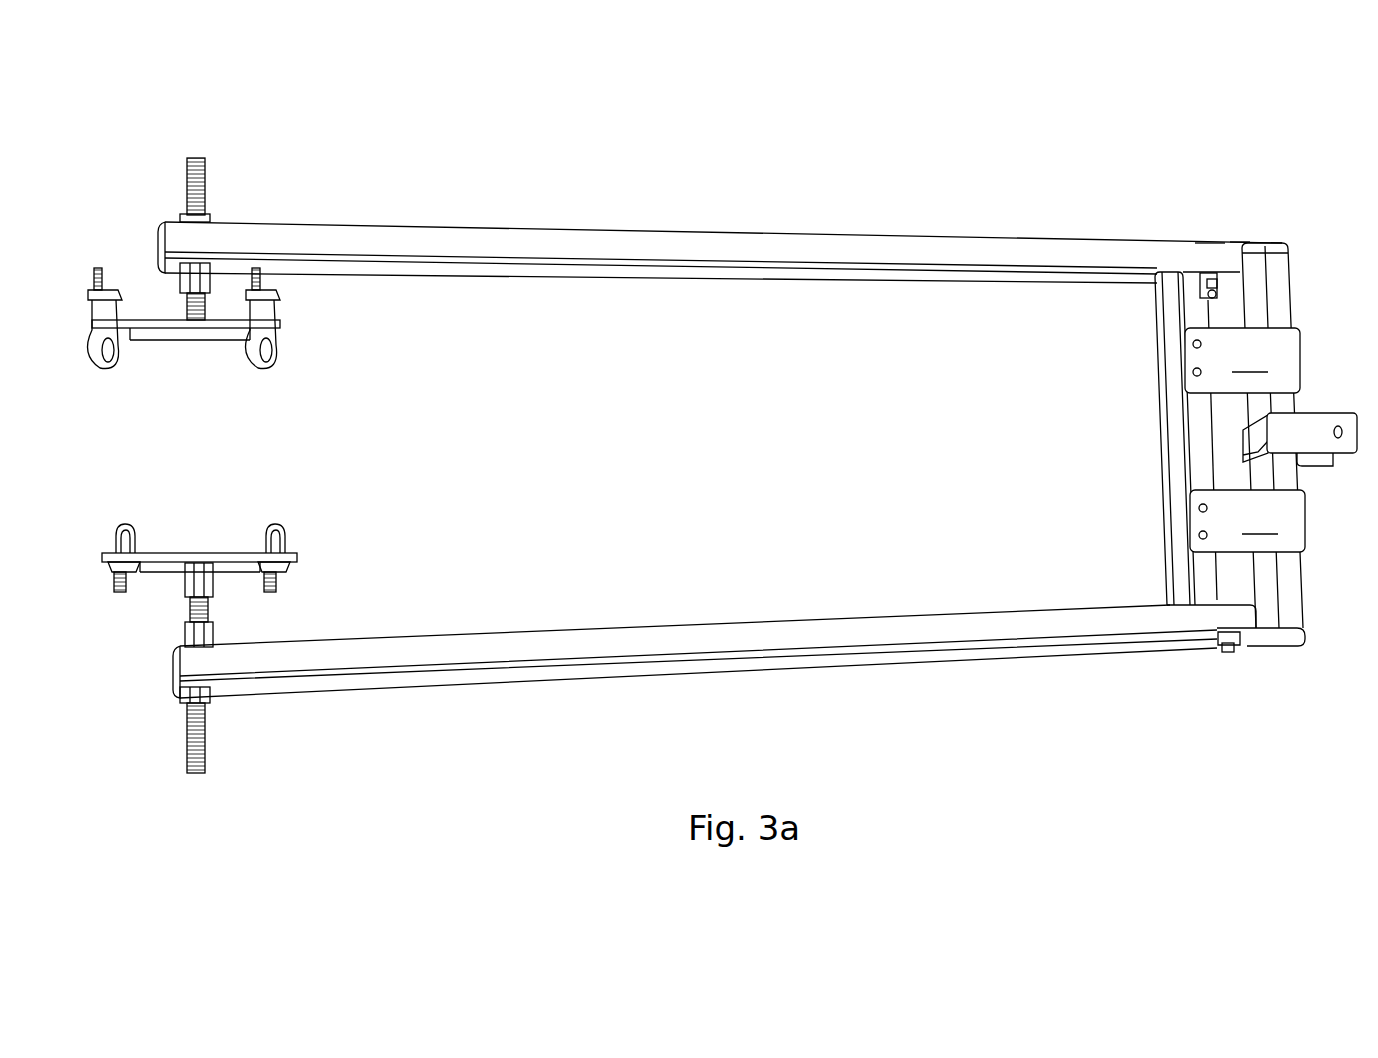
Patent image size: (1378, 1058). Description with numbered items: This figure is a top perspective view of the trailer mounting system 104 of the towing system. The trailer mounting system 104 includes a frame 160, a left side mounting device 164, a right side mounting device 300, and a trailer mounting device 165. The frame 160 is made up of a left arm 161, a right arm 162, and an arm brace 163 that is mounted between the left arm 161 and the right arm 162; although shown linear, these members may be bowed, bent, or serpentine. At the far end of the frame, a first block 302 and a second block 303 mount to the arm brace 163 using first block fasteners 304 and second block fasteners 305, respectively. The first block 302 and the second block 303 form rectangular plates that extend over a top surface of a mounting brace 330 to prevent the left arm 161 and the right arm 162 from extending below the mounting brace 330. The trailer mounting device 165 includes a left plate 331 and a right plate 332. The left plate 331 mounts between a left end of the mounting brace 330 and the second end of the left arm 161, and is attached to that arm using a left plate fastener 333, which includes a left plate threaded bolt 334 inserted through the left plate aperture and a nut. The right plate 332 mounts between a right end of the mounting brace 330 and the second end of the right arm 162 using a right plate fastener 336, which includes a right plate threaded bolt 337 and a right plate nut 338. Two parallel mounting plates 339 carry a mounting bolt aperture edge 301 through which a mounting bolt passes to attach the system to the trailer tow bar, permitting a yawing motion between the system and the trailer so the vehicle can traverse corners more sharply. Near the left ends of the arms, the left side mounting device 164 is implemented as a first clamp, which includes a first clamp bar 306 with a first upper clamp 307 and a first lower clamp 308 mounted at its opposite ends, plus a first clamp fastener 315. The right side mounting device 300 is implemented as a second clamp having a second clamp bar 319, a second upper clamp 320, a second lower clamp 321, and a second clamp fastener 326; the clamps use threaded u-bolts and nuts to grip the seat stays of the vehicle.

The trailer mounting system 104 is at (535, 228).
The frame 160 is at (998, 652).
The left arm 161 is at (835, 625).
The right arm 162 is at (835, 237).
The arm brace 163 is at (1168, 437).
The left side mounting device 164 is at (228, 552).
The trailer mounting device 165 is at (1237, 240).
The right side mounting device 300 is at (158, 336).
The mounting bolt aperture edge 301 is at (1340, 426).
The first block 302 is at (1242, 360).
The second block 303 is at (1247, 521).
The first block fasteners 304 is at (1195, 372).
The second block fasteners 305 is at (1205, 535).
The first clamp bar 306 is at (178, 554).
The first upper clamp 307 is at (118, 524).
The first lower clamp 308 is at (285, 522).
The first clamp fastener 315 is at (212, 703).
The second clamp bar 319 is at (222, 336).
The second upper clamp 320 is at (106, 366).
The second lower clamp 321 is at (285, 348).
The second clamp fastener 326 is at (208, 178).
The mounting brace 330 is at (1277, 295).
The left plate 331 is at (1275, 652).
The right plate 332 is at (1200, 240).
The left plate fastener 333 is at (1238, 638).
The left plate threaded bolt 334 is at (1232, 652).
The right plate fastener 336 is at (1215, 283).
The right plate threaded bolt 337 is at (1210, 292).
The right plate nut 338 is at (1203, 284).
The mounting plates 339 is at (1316, 476).